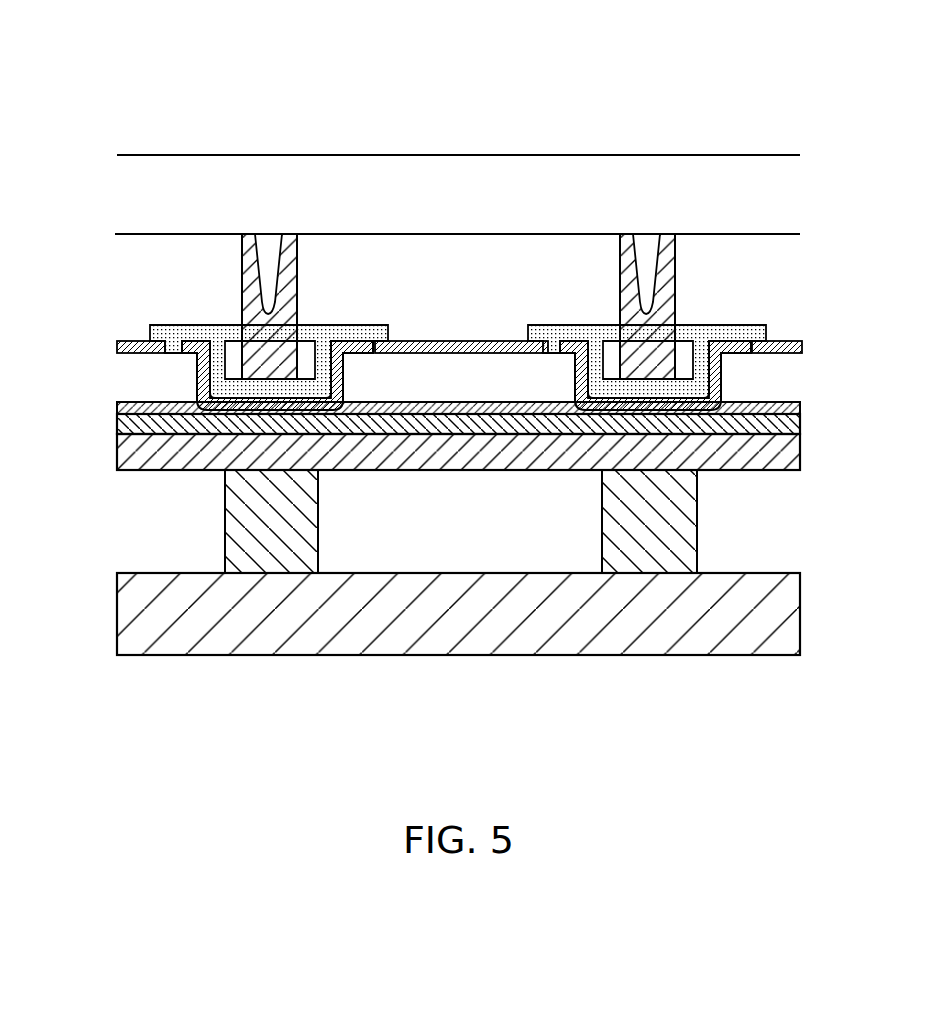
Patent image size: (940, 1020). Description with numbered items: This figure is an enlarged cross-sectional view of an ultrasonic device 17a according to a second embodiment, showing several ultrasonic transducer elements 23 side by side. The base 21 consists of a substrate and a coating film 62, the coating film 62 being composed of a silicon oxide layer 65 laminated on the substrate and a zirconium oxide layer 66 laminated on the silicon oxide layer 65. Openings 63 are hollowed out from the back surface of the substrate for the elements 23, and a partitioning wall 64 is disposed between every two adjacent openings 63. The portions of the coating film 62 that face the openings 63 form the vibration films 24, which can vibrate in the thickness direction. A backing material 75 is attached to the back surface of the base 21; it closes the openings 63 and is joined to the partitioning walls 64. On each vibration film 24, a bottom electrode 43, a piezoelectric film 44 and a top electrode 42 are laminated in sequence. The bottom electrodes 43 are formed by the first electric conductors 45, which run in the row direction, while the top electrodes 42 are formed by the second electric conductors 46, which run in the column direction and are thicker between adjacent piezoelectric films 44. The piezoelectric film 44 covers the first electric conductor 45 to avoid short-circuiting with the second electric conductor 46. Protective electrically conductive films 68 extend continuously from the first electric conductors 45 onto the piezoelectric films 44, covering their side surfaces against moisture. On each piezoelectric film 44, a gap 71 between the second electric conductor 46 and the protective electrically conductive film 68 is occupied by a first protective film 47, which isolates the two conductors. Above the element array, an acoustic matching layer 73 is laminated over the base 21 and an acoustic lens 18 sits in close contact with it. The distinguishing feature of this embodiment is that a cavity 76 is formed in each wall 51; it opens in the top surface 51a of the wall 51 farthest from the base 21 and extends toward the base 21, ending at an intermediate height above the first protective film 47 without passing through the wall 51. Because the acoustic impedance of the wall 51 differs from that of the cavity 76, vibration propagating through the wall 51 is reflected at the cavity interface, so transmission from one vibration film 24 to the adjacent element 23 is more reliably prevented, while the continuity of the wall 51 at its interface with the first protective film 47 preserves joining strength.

The ultrasonic device 17a is at (752, 134).
The acoustic lens 18 is at (142, 155).
The base 21 is at (791, 410).
The ultrasonic transducer element 23 is at (141, 268).
The vibration film 24 is at (192, 470).
The top electrode 42 is at (461, 309).
The bottom electrode 43 is at (117, 408).
The piezoelectric film 44 is at (478, 367).
The first electric conductor 45 is at (402, 414).
The second electric conductor 46 is at (130, 340).
The first protective film 47 is at (318, 402).
The wall 51 is at (247, 255).
The top surface 51a is at (290, 234).
The coating film 62 is at (525, 429).
The opening 63 is at (223, 548).
The partitioning wall 64 is at (318, 540).
The silicon oxide layer 65 is at (800, 450).
The zirconium oxide layer 66 is at (798, 423).
The protective electrically conductive film 68 is at (197, 368).
The gap 71 is at (177, 326).
The acoustic matching layer 73 is at (181, 248).
The backing material 75 is at (490, 656).
The cavity 76 is at (273, 268).